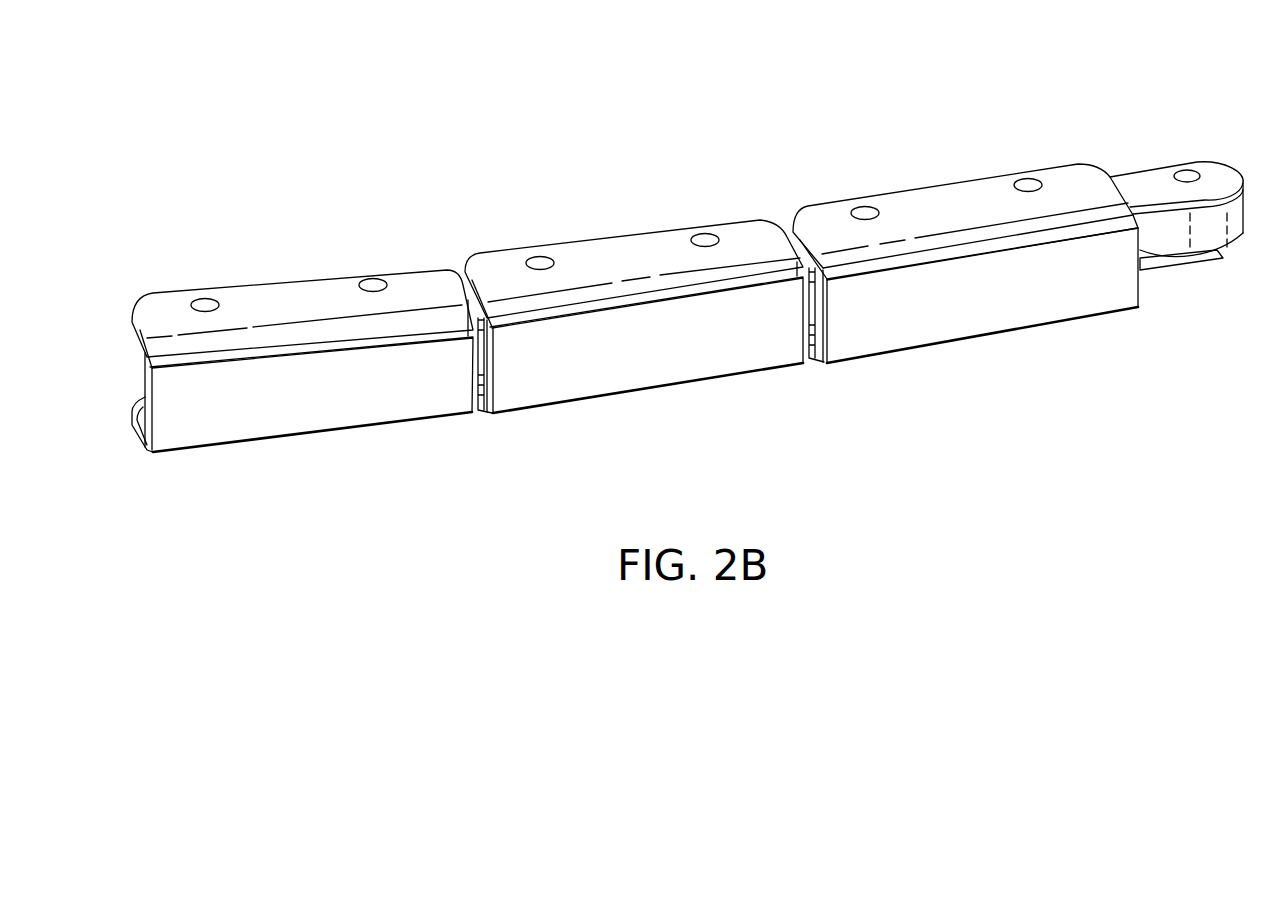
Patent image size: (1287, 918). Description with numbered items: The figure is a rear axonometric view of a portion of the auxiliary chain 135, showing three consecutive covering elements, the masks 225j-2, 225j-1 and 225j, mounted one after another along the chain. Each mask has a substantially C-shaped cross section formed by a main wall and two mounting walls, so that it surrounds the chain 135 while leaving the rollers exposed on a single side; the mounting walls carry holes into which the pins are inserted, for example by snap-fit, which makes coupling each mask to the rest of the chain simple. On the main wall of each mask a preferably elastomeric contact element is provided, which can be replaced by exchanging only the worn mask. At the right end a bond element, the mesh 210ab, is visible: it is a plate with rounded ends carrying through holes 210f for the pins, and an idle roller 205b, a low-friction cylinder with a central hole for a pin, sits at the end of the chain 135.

The auxiliary chain 135 is at (283, 85).
The mask 225j-2 is at (287, 268).
The mask 225j-1 is at (592, 226).
The mask 225j is at (805, 188).
The mesh 210ab is at (1137, 182).
The through hole 210f is at (1190, 170).
The idle roller 205b is at (1215, 245).